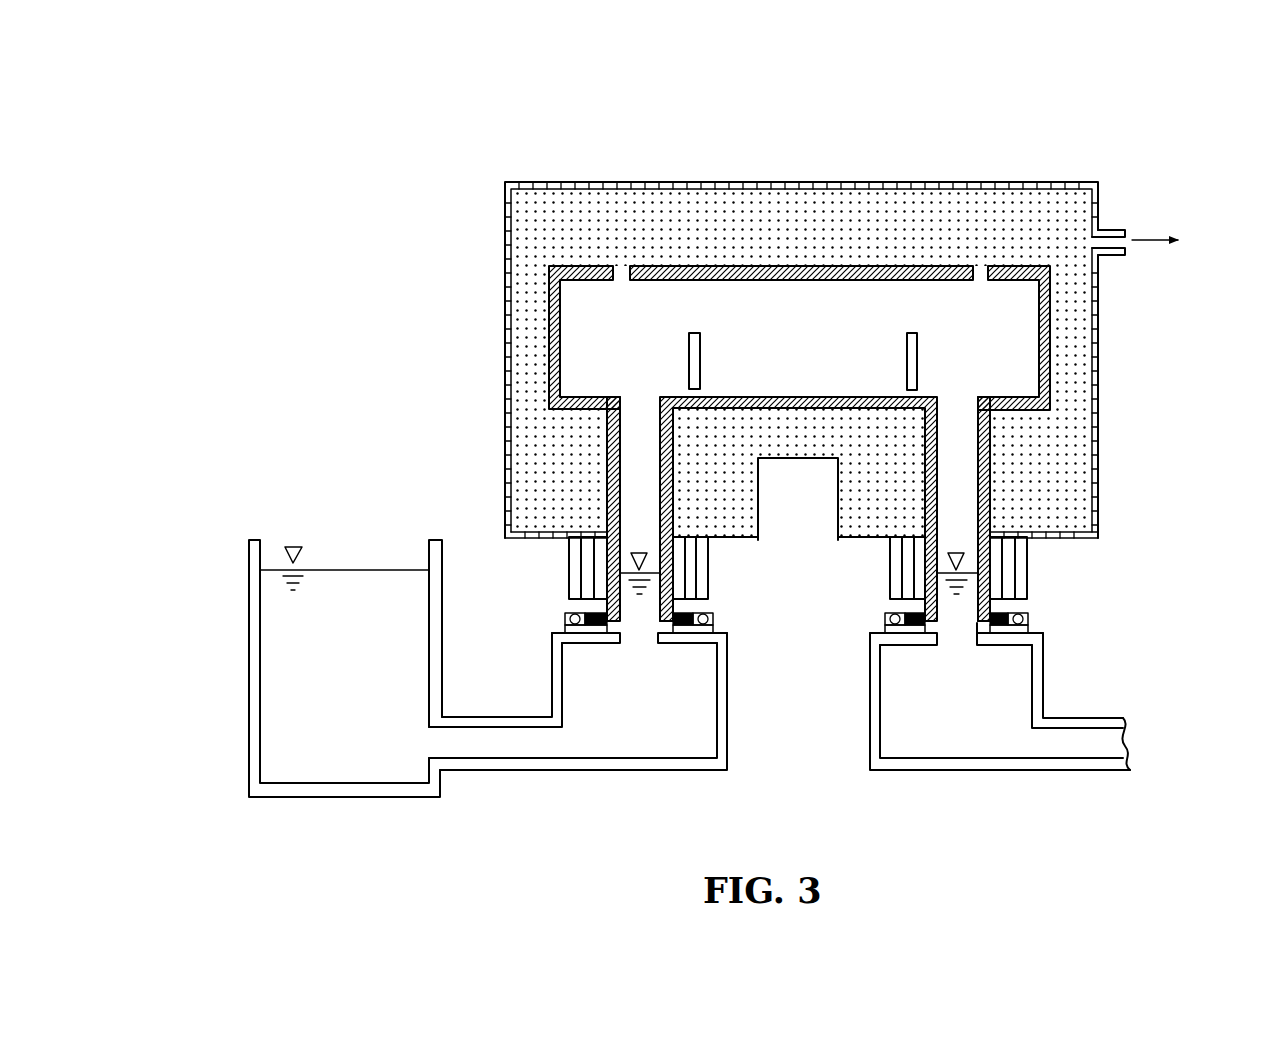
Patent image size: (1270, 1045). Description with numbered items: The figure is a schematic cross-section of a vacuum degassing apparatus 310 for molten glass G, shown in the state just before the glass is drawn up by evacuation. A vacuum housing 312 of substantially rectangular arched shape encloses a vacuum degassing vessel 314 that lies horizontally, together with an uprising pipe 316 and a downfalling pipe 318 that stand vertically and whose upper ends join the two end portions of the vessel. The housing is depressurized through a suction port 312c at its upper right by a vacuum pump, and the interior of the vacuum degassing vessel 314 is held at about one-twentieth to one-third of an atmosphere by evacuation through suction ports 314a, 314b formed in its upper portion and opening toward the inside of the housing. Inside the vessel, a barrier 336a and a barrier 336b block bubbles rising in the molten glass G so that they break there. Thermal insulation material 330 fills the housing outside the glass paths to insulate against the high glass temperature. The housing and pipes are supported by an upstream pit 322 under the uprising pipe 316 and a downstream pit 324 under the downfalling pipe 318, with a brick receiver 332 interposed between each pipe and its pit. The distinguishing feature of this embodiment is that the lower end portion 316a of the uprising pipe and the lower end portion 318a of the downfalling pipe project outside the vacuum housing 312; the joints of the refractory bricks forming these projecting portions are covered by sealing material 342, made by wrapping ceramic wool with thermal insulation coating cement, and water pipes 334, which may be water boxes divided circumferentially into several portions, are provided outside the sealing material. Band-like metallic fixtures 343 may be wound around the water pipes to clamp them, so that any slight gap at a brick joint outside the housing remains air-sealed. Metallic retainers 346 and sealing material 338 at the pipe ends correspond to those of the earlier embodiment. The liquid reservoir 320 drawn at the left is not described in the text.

The vacuum degassing apparatus 310 is at (898, 107).
The vacuum housing 312 is at (688, 182).
The suction port 312c is at (1105, 230).
The vacuum degassing vessel 314 is at (748, 268).
The suction port 314a is at (620, 268).
The suction port 314b is at (982, 266).
The uprising pipe 316 is at (685, 505).
The lower end portion of the uprising pipe 316a is at (656, 613).
The downfalling pipe 318 is at (993, 493).
The lower end portion of the downfalling pipe 318a is at (947, 613).
The liquid tank 320 is at (258, 605).
The upstream pit 322 is at (722, 728).
The downstream pit 324 is at (1043, 702).
The thermal insulation material 330 is at (1013, 215).
The brick receiver 332 is at (605, 627).
The water pipes 334 is at (587, 580).
The barrier 336a is at (700, 346).
The barrier 336b is at (917, 349).
The sealing material 338 is at (562, 647).
The sealing material 342 is at (600, 592).
The band-like metallic fixtures 343 is at (575, 548).
The metallic retainers 346 is at (572, 618).
The molten glass G is at (291, 732).